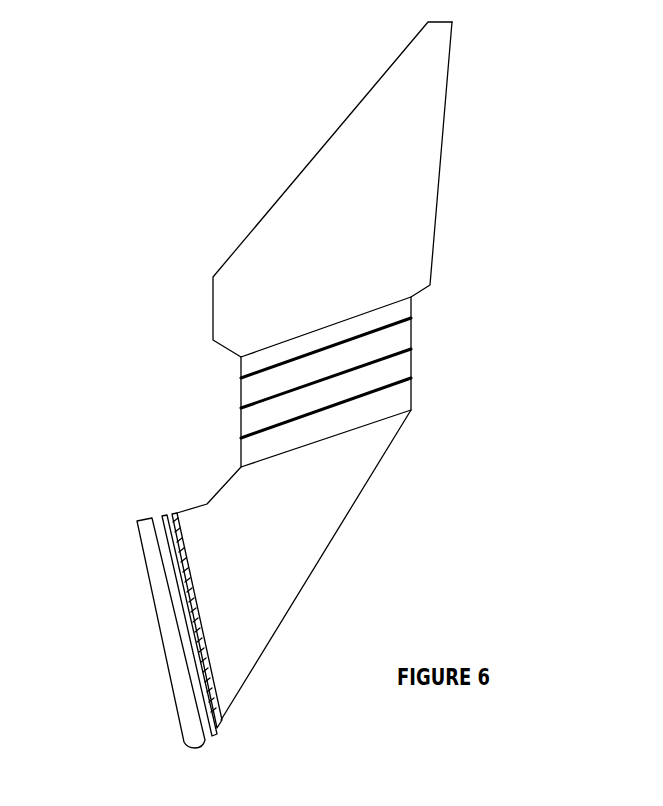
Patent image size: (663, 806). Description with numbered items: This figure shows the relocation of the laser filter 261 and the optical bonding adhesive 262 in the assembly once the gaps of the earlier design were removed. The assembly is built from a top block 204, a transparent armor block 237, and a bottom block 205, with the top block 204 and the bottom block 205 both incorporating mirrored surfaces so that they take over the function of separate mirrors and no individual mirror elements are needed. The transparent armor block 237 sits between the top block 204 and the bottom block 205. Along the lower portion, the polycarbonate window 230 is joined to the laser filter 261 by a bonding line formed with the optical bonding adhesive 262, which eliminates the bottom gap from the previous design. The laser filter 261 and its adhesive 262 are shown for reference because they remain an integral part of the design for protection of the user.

The top block 204 is at (379, 189).
The bottom block 205 is at (297, 565).
The transparent armor block 237 is at (385, 382).
The polycarbonate window 230 is at (122, 630).
The laser filter 261 is at (197, 642).
The optical bonding adhesive 262 is at (170, 588).